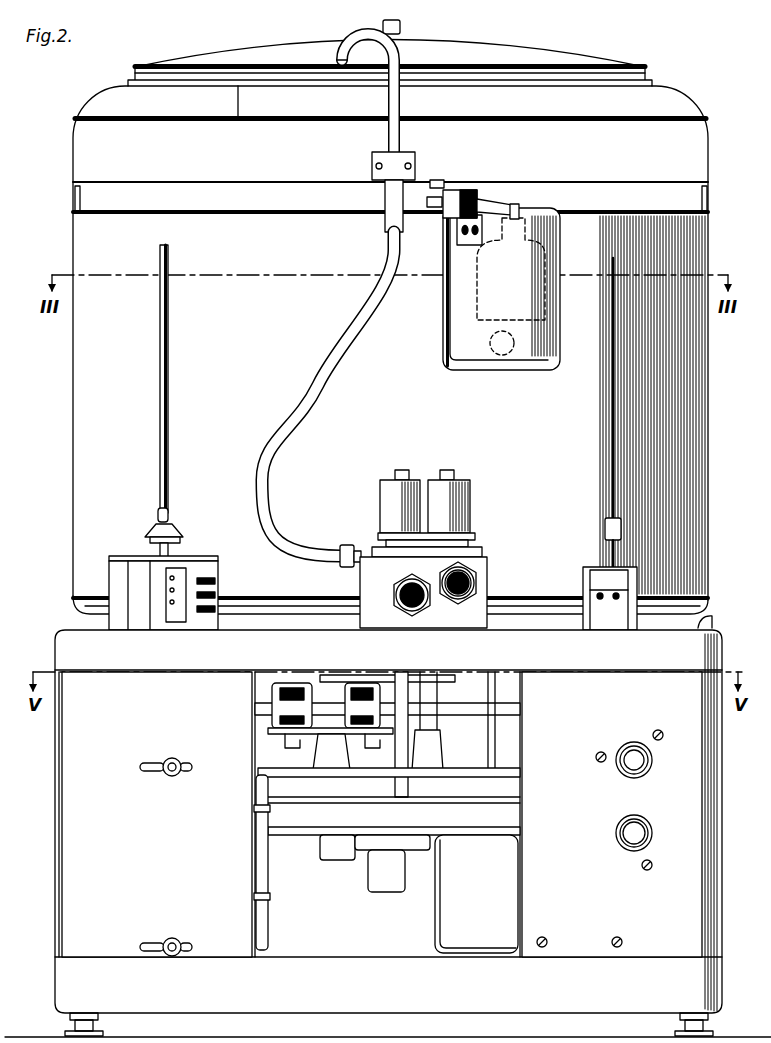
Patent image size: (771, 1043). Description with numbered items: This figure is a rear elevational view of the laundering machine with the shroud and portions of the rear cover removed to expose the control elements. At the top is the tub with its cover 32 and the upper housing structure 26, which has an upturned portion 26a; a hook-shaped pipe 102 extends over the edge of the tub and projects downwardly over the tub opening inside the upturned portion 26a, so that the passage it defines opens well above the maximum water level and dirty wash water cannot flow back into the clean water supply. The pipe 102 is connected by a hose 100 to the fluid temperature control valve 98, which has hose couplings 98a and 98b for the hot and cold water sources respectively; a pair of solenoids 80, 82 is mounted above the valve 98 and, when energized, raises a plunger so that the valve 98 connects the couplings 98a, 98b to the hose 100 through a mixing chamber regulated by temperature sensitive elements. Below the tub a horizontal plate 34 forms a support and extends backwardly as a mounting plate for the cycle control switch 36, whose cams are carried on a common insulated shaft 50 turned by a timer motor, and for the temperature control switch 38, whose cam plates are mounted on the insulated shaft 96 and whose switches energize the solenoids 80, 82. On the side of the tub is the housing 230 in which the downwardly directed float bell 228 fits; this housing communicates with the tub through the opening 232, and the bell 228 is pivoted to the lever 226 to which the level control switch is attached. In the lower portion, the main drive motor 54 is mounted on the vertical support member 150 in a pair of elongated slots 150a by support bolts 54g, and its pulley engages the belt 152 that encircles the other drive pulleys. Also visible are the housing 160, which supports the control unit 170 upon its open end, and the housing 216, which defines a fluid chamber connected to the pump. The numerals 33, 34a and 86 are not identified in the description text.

The upper housing structure 26 is at (677, 104).
The upturned portion 26a is at (253, 97).
The cover 32 is at (522, 52).
The lid fitting 33 is at (399, 29).
The horizontal plate 34 is at (70, 632).
The base rim 34a is at (701, 624).
The cycle control switch 36 is at (118, 578).
The temperature control switch 38 is at (597, 572).
The insulated shaft 50 is at (168, 412).
The main drive motor 54 is at (268, 877).
The support bolts 54g is at (178, 757).
The mix solenoid 80 is at (462, 478).
The solenoid 82 is at (385, 478).
The lever mount 86 is at (456, 192).
The insulated shaft 96 is at (612, 431).
The fluid temperature control valve 98 is at (443, 578).
The hose coupling 98a is at (402, 584).
The hose coupling 98b is at (446, 597).
The hose 100 is at (296, 411).
The hook-shaped pipe 102 is at (341, 47).
The vertical support member 150 is at (78, 870).
The elongated slots 150a is at (146, 762).
The belt 152 is at (455, 705).
The housing 160 is at (301, 826).
The control unit 170 is at (285, 690).
The housing 216 is at (435, 918).
The lever 226 is at (496, 202).
The float bell 228 is at (470, 288).
The housing 230 is at (460, 333).
The opening 232 is at (500, 360).